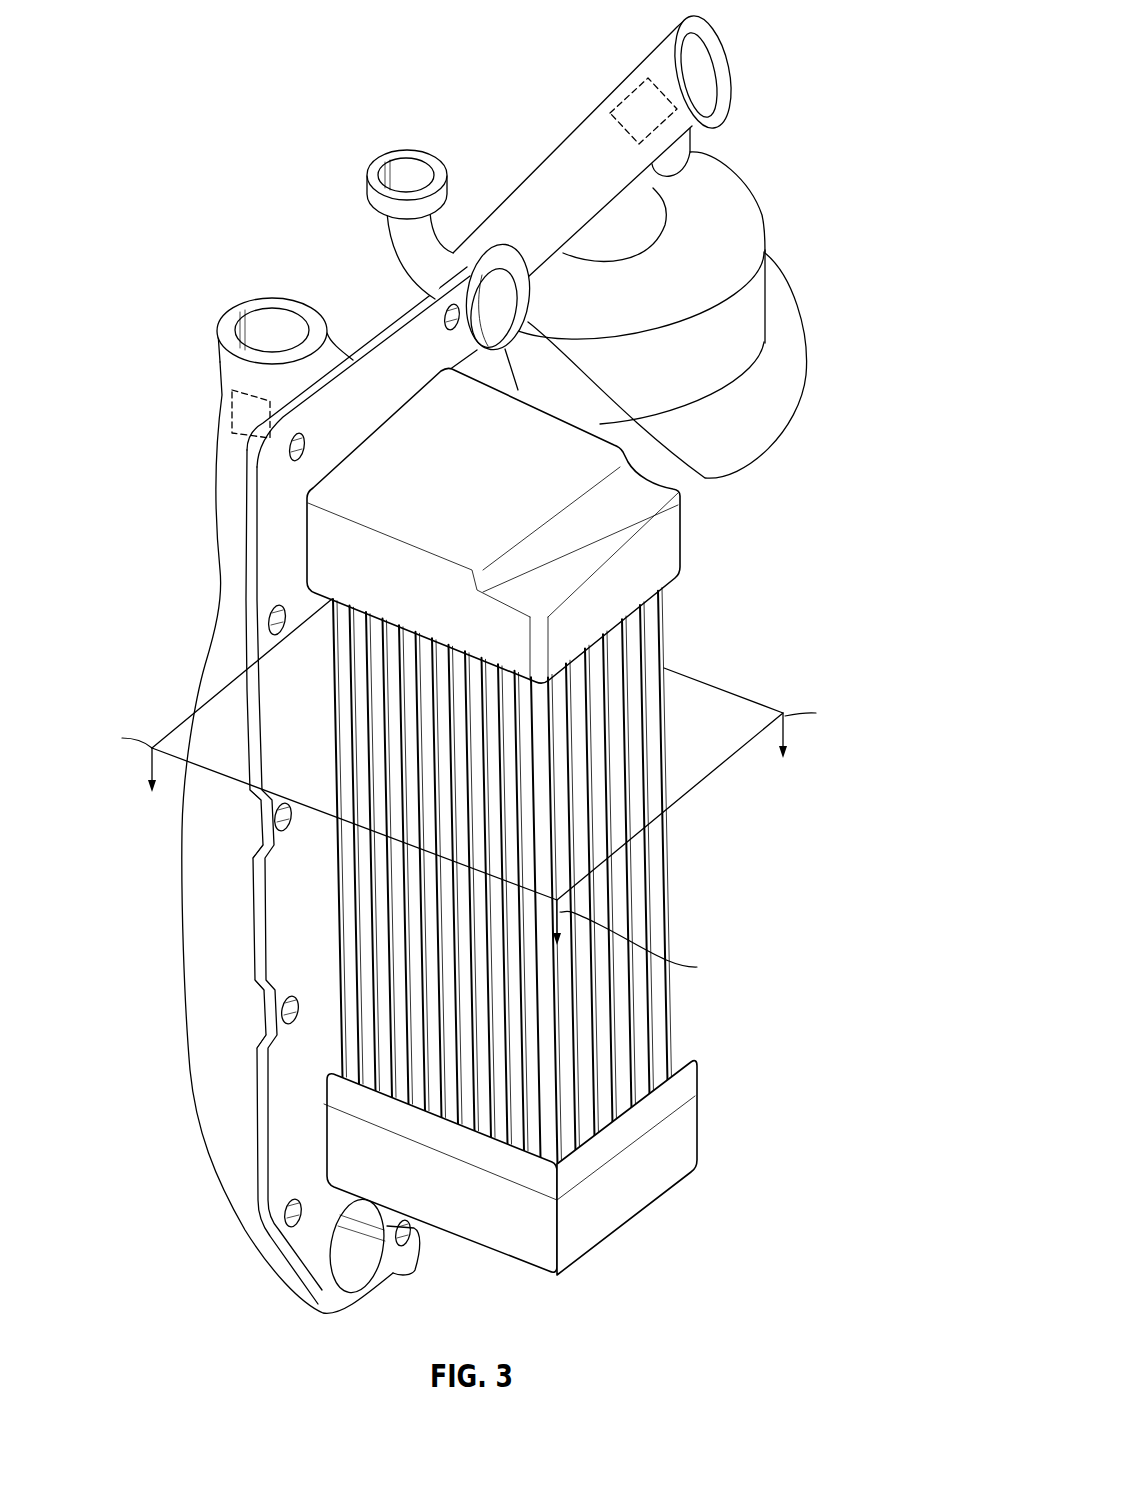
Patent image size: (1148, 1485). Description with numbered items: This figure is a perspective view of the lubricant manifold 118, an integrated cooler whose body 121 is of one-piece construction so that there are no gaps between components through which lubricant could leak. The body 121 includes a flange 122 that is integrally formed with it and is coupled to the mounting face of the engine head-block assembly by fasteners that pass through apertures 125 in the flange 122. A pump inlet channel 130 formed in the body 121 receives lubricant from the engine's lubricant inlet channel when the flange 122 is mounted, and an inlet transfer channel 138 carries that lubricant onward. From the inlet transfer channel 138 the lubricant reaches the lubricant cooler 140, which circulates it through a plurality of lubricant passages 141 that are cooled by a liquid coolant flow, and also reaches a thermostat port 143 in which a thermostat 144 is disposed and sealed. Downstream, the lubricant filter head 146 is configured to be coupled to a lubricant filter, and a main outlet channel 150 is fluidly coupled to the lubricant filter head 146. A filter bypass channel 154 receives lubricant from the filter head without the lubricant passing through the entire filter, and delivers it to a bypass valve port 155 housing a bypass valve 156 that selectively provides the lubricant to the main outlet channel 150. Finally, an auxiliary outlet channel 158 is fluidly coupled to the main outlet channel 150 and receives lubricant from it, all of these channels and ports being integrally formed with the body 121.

The lubricant manifold 118 is at (505, 664).
The body 121 is at (356, 308).
The flange 122 is at (297, 790).
The apertures 125 is at (270, 628).
The pump inlet channel 130 is at (352, 1266).
The inlet transfer channel 138 is at (212, 1005).
The lubricant cooler 140 is at (542, 821).
The lubricant passages 141 is at (638, 868).
The thermostat port 143 is at (243, 377).
The thermostat 144 is at (228, 408).
The lubricant filter head 146 is at (685, 283).
The main outlet channel 150 is at (623, 254).
The filter bypass channel 154 is at (678, 156).
The bypass valve port 155 is at (673, 66).
The bypass valve 156 is at (620, 88).
The auxiliary outlet channel 158 is at (376, 172).